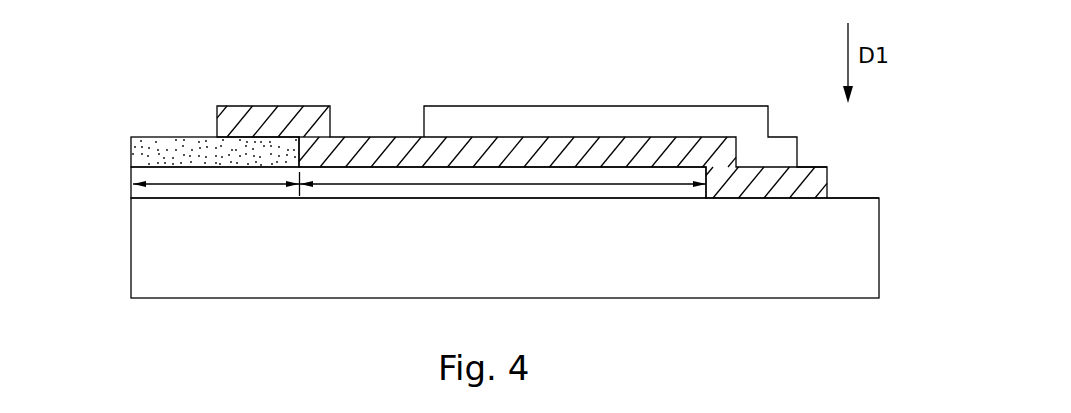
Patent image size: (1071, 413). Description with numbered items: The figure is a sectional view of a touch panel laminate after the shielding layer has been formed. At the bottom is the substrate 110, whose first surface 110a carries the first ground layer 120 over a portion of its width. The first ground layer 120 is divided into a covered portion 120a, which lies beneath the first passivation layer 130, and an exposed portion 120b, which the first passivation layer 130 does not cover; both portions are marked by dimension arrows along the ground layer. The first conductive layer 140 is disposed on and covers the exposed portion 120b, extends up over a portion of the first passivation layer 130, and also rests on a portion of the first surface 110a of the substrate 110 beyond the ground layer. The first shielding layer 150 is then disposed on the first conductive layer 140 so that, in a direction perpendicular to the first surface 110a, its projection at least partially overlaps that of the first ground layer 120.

The substrate 110 is at (855, 248).
The first surface 110a is at (860, 180).
The first ground layer 120 is at (131, 191).
The covered portion 120a is at (179, 183).
The exposed portion 120b is at (477, 183).
The first passivation layer 130 is at (131, 151).
The first conductive layer 140 is at (371, 150).
The first shielding layer 150 is at (682, 113).